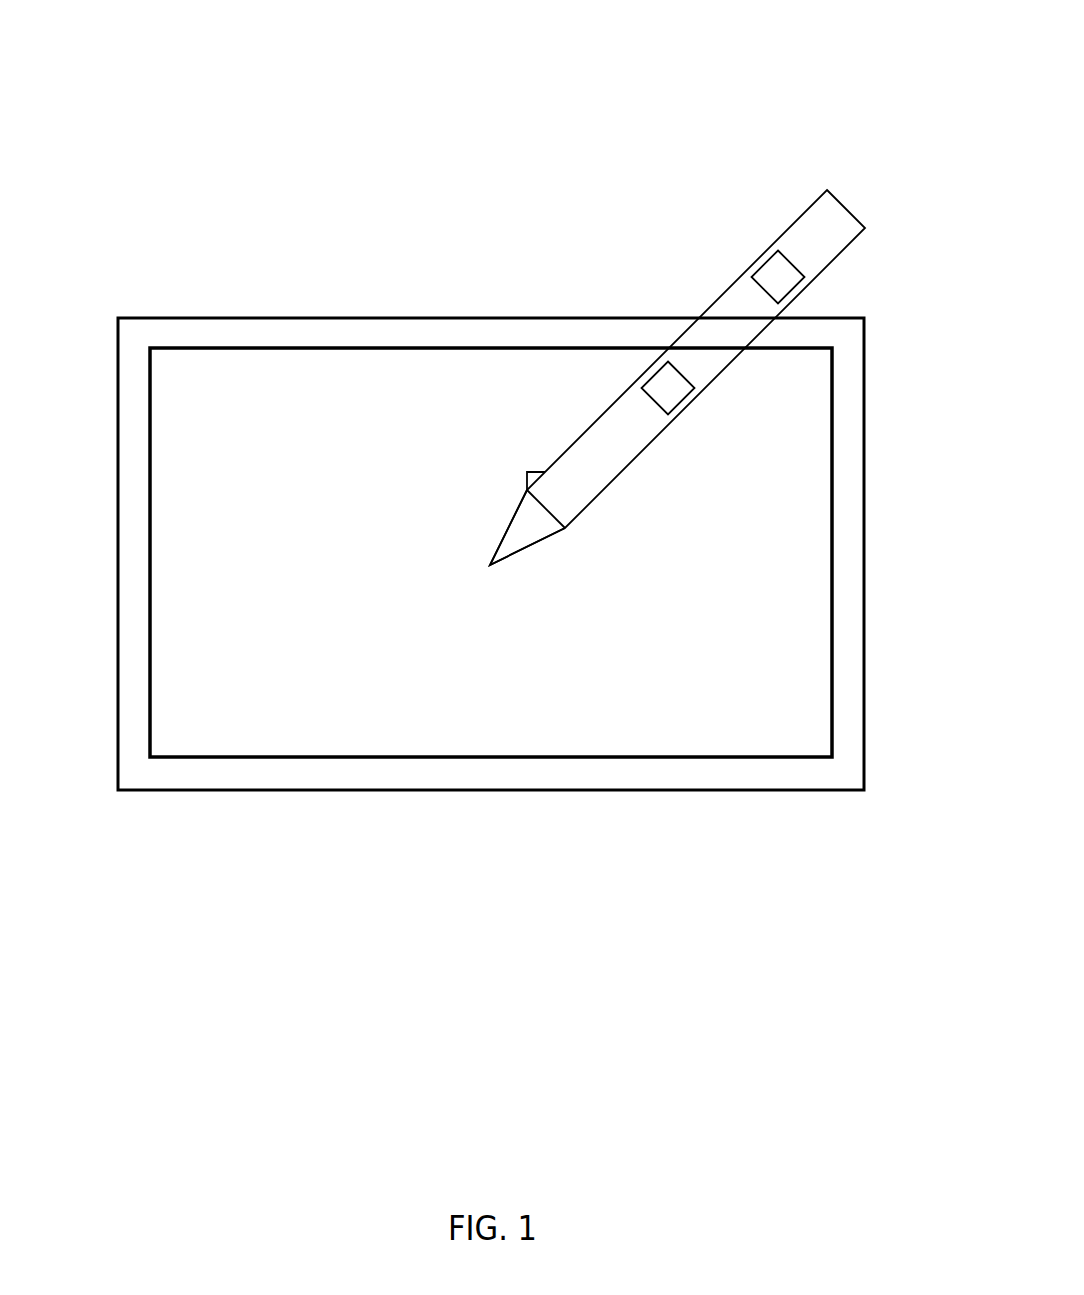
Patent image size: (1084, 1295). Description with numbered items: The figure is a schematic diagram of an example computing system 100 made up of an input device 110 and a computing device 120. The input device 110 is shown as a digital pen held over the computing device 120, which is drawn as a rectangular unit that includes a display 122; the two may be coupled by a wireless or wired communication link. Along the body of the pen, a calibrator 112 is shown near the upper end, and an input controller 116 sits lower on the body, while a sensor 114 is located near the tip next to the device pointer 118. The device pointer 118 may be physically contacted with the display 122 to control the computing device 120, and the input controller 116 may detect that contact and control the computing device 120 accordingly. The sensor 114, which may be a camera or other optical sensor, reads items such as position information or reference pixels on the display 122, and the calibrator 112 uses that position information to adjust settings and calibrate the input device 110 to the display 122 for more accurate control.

The computing system 100 is at (844, 44).
The input device 110 is at (708, 362).
The calibrator 112 is at (715, 254).
The sensor 114 is at (491, 464).
The input controller 116 is at (621, 385).
The device pointer 118 is at (482, 527).
The computing device 120 is at (540, 554).
The display 122 is at (438, 506).